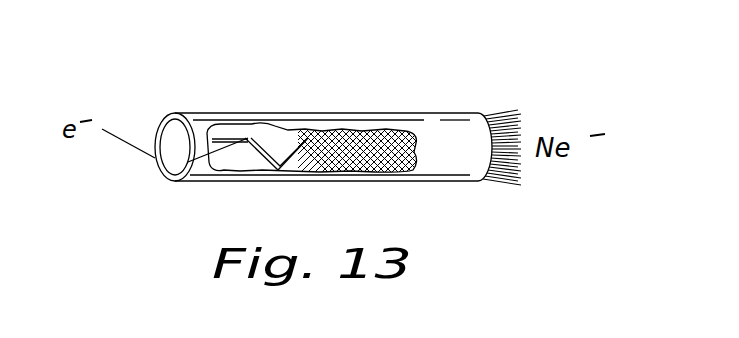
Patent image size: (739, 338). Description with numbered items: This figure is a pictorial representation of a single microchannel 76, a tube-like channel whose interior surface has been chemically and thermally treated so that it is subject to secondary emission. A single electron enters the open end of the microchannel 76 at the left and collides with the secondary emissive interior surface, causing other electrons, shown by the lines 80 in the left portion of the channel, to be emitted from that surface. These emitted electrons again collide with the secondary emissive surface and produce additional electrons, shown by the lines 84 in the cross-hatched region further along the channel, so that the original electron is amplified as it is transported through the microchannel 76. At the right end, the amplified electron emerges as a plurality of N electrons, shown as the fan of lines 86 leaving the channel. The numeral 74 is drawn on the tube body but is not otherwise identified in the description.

The glass tube 74 is at (443, 125).
The microchannel 76 is at (175, 130).
The lines showing emitted electrons 80 is at (263, 135).
The lines showing additional electrons 84 is at (393, 133).
The Ne⁻ electrons 86 is at (512, 178).